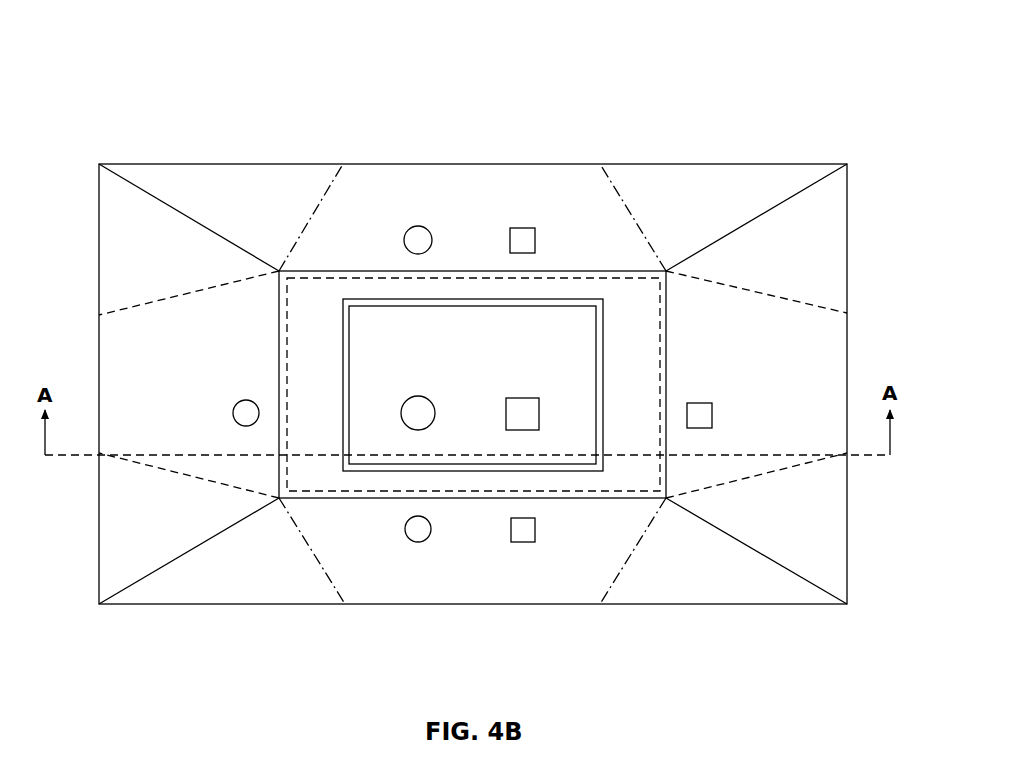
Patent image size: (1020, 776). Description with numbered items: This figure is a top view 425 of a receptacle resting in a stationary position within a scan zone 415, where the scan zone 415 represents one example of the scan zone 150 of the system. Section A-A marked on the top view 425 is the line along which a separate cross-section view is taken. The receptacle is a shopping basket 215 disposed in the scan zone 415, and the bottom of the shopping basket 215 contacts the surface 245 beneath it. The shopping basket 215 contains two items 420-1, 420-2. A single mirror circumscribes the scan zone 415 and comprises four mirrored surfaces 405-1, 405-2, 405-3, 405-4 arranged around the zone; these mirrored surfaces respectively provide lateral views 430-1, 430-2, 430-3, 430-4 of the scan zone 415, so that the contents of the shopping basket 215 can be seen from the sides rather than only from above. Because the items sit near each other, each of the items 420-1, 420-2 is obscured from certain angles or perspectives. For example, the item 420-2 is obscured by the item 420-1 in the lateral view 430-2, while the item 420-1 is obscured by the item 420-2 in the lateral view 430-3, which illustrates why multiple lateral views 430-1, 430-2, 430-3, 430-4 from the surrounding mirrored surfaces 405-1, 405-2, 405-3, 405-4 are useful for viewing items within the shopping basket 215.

The top view 425 is at (770, 58).
The mirrored surface 405-1 is at (235, 578).
The mirrored surface 405-2 is at (128, 548).
The mirrored surface 405-3 is at (818, 228).
The mirrored surface 405-4 is at (215, 188).
The lateral view 430-1 is at (330, 582).
The lateral view 430-2 is at (133, 308).
The lateral view 430-3 is at (818, 307).
The lateral view 430-4 is at (310, 222).
The scan zone 415 is at (585, 271).
The scan zone 150 is at (473, 384).
The surface 245 is at (622, 302).
The shopping basket 215 is at (605, 315).
The item 420-1 is at (417, 397).
The item 420-2 is at (520, 397).